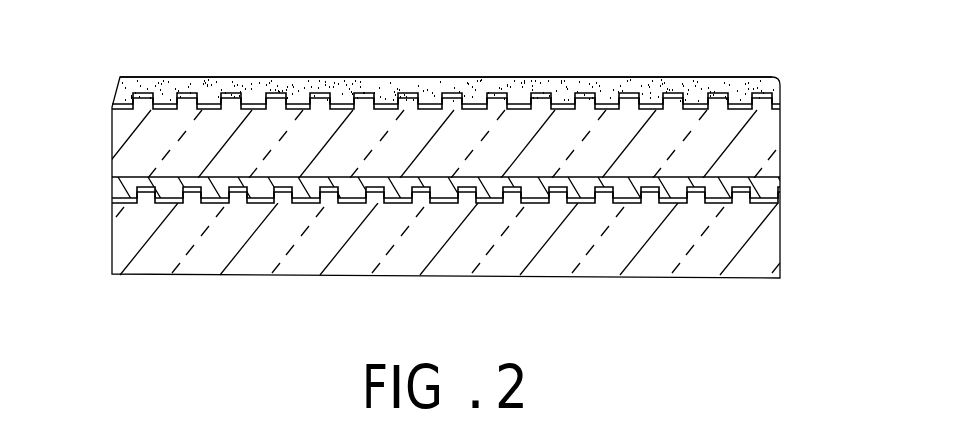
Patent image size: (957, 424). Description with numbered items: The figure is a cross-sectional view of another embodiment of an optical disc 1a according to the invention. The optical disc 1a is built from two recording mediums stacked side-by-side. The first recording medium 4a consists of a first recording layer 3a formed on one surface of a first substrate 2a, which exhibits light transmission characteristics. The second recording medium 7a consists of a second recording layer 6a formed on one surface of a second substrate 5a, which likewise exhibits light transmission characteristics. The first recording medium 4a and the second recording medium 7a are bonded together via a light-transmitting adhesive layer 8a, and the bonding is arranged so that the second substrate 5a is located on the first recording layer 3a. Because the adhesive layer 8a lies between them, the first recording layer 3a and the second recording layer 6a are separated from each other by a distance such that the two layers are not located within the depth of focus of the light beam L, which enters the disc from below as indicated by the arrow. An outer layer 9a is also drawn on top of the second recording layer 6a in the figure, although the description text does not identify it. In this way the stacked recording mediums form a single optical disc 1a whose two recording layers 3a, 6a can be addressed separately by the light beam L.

The optical disc 1a is at (433, 69).
The first substrate 2a is at (767, 251).
The first recording layer 3a is at (777, 207).
The first recording medium 4a is at (121, 222).
The second substrate 5a is at (772, 142).
The second recording layer 6a is at (782, 109).
The second recording medium 7a is at (121, 124).
The adhesive layer 8a is at (780, 182).
The protective layer 9a is at (755, 77).
The light beam L is at (632, 298).